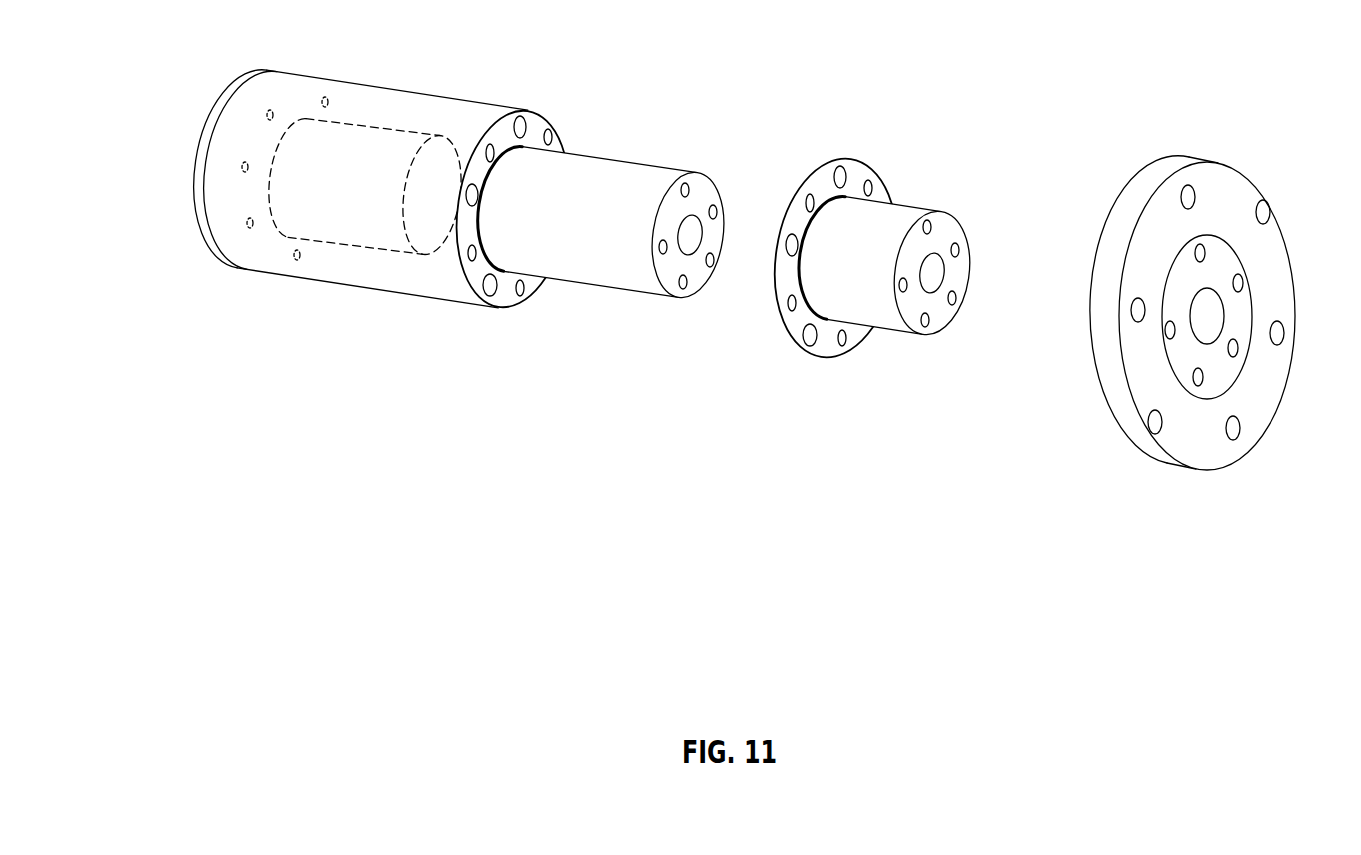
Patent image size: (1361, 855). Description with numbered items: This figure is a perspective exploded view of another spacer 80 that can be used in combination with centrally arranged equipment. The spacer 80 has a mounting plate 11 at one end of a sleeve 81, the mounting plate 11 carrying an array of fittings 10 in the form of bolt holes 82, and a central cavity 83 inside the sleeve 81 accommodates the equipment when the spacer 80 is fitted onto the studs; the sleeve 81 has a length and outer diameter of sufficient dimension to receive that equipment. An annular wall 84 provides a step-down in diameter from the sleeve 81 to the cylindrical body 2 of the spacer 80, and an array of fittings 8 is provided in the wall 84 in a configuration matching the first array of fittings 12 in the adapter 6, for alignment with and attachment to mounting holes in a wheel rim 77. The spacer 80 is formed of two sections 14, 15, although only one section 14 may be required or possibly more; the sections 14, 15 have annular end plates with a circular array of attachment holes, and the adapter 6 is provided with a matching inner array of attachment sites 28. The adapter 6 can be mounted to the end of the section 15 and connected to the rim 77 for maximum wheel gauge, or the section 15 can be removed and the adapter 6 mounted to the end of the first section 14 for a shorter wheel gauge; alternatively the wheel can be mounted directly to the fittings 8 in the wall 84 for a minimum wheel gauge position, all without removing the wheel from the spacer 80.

The cylindrical body 2 is at (605, 157).
The adapter 6 is at (1213, 163).
The array of fittings 8 is at (530, 125).
The fittings 10 is at (243, 167).
The mounting plate 11 is at (232, 88).
The first array of fittings 12 is at (1181, 184).
The first section 14 is at (582, 275).
The second section 15 is at (840, 305).
The inner array of attachment sites 28 is at (1203, 244).
The wheel rim 77 is at (843, 160).
The spacer 80 is at (640, 292).
The sleeve 81 is at (393, 88).
The bolt holes 82 is at (247, 229).
The central cavity 83 is at (306, 165).
The annular wall 84 is at (552, 133).